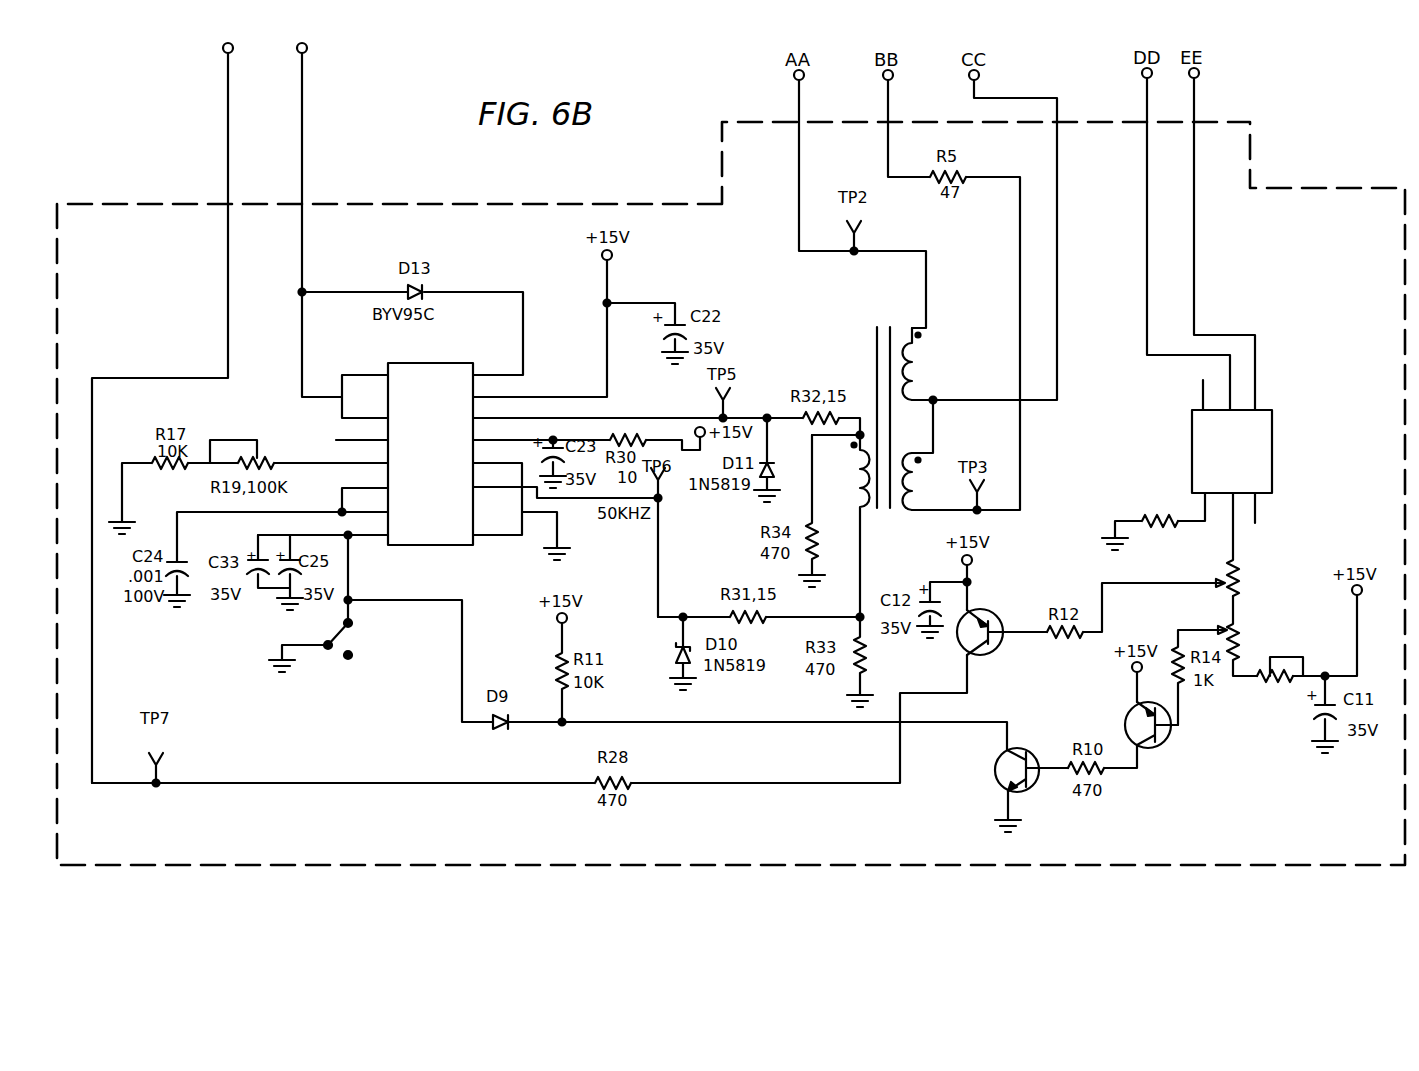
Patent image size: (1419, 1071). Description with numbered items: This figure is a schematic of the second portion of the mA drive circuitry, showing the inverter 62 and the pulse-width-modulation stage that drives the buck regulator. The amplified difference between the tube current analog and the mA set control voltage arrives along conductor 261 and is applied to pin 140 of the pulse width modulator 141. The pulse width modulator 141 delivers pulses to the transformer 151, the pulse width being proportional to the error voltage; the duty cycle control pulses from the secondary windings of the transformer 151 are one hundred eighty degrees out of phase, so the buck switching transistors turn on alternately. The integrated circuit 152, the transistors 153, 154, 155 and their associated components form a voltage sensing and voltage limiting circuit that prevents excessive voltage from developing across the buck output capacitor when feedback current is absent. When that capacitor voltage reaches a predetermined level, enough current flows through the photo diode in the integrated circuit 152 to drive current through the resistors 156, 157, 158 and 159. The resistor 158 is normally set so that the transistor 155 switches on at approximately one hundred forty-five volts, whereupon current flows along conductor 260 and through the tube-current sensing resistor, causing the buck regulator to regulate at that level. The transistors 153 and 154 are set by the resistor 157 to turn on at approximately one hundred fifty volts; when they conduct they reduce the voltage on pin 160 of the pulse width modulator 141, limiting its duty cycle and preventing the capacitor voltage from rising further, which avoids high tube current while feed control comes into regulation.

The inverter 62 is at (1293, 881).
The pin of pulse width modulator 140 is at (388, 390).
The pulse width modulator 141 is at (440, 546).
The transformer 151 is at (950, 376).
The integrated circuit 152 is at (1272, 456).
The transistor 153 is at (1172, 740).
The transistor 154 is at (1033, 746).
The transistor 155 is at (990, 616).
The resistor 156 is at (1290, 690).
The resistor 157 is at (1255, 623).
The resistor 158 is at (1272, 576).
The resistor 159 is at (1141, 504).
The pin of pulse width modulator 160 is at (385, 548).
The conductor 260 is at (229, 89).
The conductor 261 is at (302, 88).